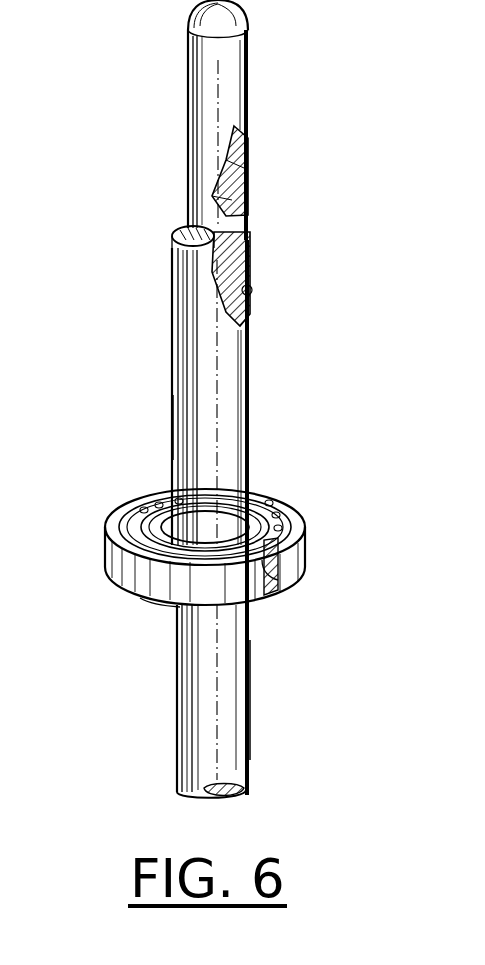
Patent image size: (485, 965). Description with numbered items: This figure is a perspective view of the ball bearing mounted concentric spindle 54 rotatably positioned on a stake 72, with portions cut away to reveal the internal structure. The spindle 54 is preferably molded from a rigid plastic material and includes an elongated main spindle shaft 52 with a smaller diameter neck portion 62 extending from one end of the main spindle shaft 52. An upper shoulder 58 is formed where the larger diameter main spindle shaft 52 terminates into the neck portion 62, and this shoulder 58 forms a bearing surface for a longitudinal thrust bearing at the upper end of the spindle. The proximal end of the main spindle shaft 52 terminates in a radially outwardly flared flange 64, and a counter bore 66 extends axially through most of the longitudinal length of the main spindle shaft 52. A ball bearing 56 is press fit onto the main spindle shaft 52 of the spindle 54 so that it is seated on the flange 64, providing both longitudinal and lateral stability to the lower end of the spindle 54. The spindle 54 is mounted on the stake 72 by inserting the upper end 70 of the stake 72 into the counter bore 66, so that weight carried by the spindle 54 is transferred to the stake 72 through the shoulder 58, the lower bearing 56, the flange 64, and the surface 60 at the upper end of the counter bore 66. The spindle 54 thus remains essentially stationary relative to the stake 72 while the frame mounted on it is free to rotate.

The main spindle shaft 52 is at (172, 377).
The spindle 54 is at (172, 428).
The ball bearing 56 is at (100, 530).
The upper shoulder 58 is at (178, 232).
The surface at the upper end of counterbore 60 is at (250, 206).
The neck portion 62 is at (188, 95).
The flange 64 is at (152, 605).
The counter bore 66 is at (258, 296).
The upper end of stake 70 is at (256, 272).
The stake 72 is at (252, 697).